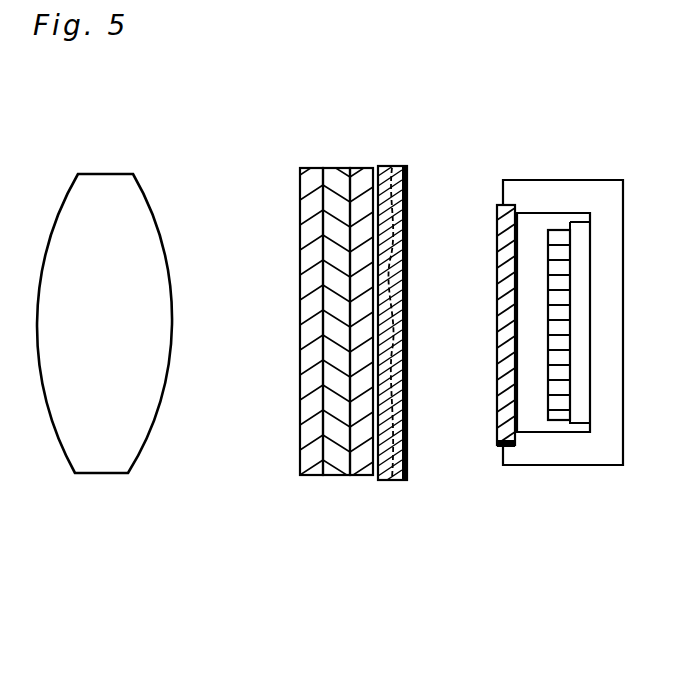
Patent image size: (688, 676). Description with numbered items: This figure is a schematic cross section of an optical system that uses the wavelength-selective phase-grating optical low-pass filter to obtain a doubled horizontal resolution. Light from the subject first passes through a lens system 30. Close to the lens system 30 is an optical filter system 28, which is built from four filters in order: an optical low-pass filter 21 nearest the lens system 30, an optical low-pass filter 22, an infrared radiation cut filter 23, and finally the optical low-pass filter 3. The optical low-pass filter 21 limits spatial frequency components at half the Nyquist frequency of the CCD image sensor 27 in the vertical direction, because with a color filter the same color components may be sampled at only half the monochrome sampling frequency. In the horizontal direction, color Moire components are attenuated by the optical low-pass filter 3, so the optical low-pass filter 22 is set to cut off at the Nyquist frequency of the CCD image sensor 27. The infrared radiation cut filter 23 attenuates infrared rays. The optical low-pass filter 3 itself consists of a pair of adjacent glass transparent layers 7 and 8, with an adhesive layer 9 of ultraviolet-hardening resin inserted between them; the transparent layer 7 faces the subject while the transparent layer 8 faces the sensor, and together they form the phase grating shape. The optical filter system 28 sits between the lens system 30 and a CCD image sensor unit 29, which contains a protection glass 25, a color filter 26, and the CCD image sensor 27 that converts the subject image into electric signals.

The optical low-pass filter 3 is at (378, 336).
The transparent layer 7 is at (382, 163).
The transparent layer 8 is at (410, 187).
The adhesive layer 9 is at (398, 165).
The optical low-pass filter 21 is at (307, 467).
The optical low-pass filter 22 is at (335, 467).
The infrared radiation cut filter 23 is at (358, 467).
The protection glass 25 is at (502, 440).
The color filter 26 is at (558, 415).
The CCD image sensor 27 is at (580, 415).
The optical filter system 28 is at (340, 368).
The CCD image sensor unit 29 is at (538, 413).
The lens system 30 is at (92, 467).